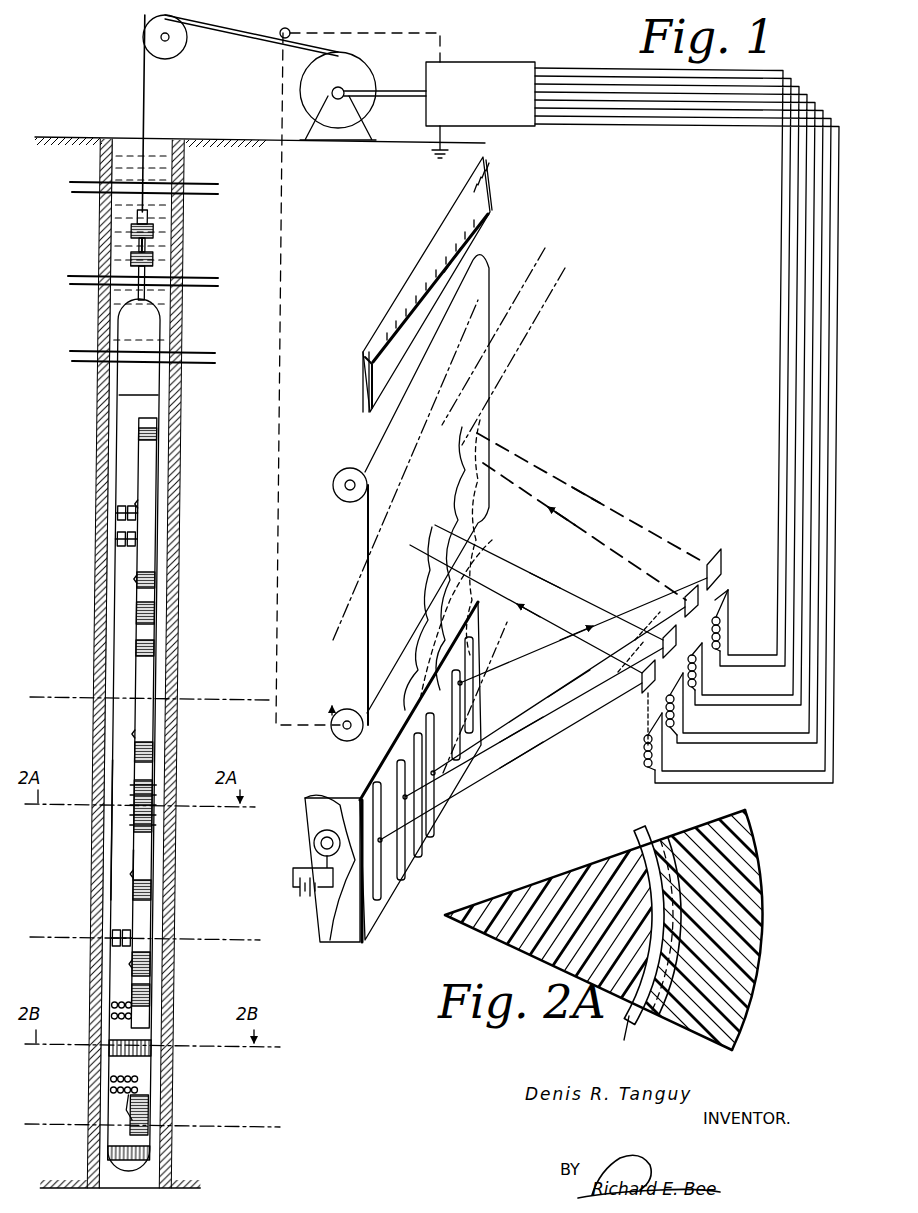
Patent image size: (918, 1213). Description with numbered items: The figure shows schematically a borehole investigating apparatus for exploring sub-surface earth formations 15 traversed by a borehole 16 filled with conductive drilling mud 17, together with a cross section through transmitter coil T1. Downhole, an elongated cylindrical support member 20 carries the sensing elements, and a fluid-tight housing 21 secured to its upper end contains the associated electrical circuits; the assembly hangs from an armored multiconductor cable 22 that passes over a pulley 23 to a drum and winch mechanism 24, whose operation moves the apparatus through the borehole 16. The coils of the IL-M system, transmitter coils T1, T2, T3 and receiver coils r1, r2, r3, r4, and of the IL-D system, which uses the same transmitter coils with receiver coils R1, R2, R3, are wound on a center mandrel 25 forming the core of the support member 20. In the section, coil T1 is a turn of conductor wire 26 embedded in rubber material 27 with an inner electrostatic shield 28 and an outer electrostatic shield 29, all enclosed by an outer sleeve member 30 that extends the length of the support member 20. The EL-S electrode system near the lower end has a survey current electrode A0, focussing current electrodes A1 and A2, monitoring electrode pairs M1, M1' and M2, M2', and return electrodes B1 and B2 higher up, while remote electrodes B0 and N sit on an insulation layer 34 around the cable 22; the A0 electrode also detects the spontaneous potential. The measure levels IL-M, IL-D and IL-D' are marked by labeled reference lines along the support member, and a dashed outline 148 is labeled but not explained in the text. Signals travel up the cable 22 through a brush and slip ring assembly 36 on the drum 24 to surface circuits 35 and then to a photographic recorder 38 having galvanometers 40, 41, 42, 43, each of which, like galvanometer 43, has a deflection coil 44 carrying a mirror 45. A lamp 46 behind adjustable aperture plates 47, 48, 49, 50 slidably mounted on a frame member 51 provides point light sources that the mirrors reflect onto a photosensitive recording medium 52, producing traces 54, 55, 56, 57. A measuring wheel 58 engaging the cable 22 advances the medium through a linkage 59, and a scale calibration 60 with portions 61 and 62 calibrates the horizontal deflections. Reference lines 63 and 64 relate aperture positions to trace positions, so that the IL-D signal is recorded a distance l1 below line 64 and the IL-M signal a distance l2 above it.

In FIG. 1, the sub-surface earth formations 15 is at (103, 424).
In FIG. 1, the borehole 16 is at (105, 452).
In FIG. 1, the drilling mud 17 is at (165, 172).
In FIG. 1, the support member 20 is at (108, 607).
In FIG. 1, the fluid-tight housing 21 is at (118, 382).
In FIG. 1, the armored multiconductor cable 22 is at (140, 102).
In FIG. 1, the pulley 23 is at (178, 60).
In FIG. 1, the drum and winch mechanism 24 is at (360, 60).
In FIG. 1, the center mandrel 25 is at (150, 856).
In FIG. 2A, the center mandrel 25 is at (552, 880).
In FIG. 2A, the turn of conductor wire 26 is at (640, 834).
In FIG. 2A, the rubber material 27 is at (658, 1010).
In FIG. 2A, the inner electrostatic shield 28 is at (622, 1008).
In FIG. 2A, the outer electrostatic shield 29 is at (640, 1012).
In FIG. 1, the outer sleeve member 30 is at (110, 842).
In FIG. 2A, the outer sleeve member 30 is at (742, 906).
In FIG. 1, the layer of electrical insulation material 34 is at (150, 245).
In FIG. 1, the surface circuits 35 is at (478, 62).
In FIG. 1, the brush and slip ring assembly 36 is at (352, 88).
In FIG. 1, the photographic recorder 38 is at (620, 466).
In FIG. 1, the recording galvanometer 40 is at (718, 572).
In FIG. 1, the recording galvanometer 41 is at (712, 588).
In FIG. 1, the recording galvanometer 42 is at (690, 632).
In FIG. 1, the recording galvanometer 43 is at (660, 725).
In FIG. 1, the deflection coil 44 is at (645, 758).
In FIG. 1, the light reflecting mirror 45 is at (642, 708).
In FIG. 1, the electric lamp 46 is at (315, 838).
In FIG. 1, the adjustable aperture plate 47 is at (470, 655).
In FIG. 1, the adjustable aperture plate 48 is at (432, 770).
In FIG. 1, the adjustable aperture plate 49 is at (405, 795).
In FIG. 1, the adjustable aperture plate 50 is at (345, 810).
In FIG. 1, the frame member 51 is at (368, 945).
In FIG. 1, the photosensitive recording medium 52 is at (360, 653).
In FIG. 1, the trace 54 is at (470, 500).
In FIG. 1, the trace 55 is at (478, 540).
In FIG. 1, the trace 56 is at (445, 568).
In FIG. 1, the trace 57 is at (415, 620).
In FIG. 1, the measuring wheel 58 is at (280, 35).
In FIG. 1, the linkage mechanism 59 is at (280, 360).
In FIG. 1, the scale calibration 60 is at (500, 192).
In FIG. 1, the scale calibration portion 61 is at (458, 248).
In FIG. 1, the scale calibration portion 62 is at (385, 345).
In FIG. 1, the reference line 63 is at (500, 645).
In FIG. 1, the reference line 64 is at (347, 612).
In FIG. 1, the depth drive linkage 148 is at (340, 33).
In FIG. 1, the remote voltage reference electrode N is at (130, 228).
In FIG. 1, the current return electrode B0 is at (130, 256).
In FIG. 1, the current return electrode B1 is at (120, 538).
In FIG. 1, the current return electrode B2 is at (120, 512).
In FIG. 1, the transmitter coil T1 is at (155, 820).
In FIG. 2A, the transmitter coil T1 is at (632, 836).
In FIG. 1, the transmitter coil T2 is at (155, 748).
In FIG. 1, the transmitter coil T3 is at (160, 440).
In FIG. 1, the receiver coil R1 is at (155, 586).
In FIG. 1, the receiver coil R2 is at (155, 652).
In FIG. 1, the receiver coil R3 is at (155, 952).
In FIG. 1, the receiver coil r1 is at (155, 1000).
In FIG. 1, the receiver coil r2 is at (155, 1112).
In FIG. 1, the receiver coil r3 is at (155, 896).
In FIG. 1, the receiver coil r4 is at (155, 616).
In FIG. 1, the survey current electrode A0 is at (108, 1048).
In FIG. 1, the upper focussing current electrode A1 is at (108, 938).
In FIG. 1, the lower focussing current electrode A2 is at (105, 1152).
In FIG. 1, the voltage monitoring electrode M1 is at (96, 1005).
In FIG. 1, the voltage monitoring electrode M1' is at (95, 983).
In FIG. 1, the voltage monitoring electrode M2 is at (90, 1083).
In FIG. 1, the voltage monitoring electrode M2' is at (90, 1105).
In FIG. 1, the Induction Log-Deep system measure level IL-D is at (150, 686).
In FIG. 1, the Induction Log-Medium system measure level IL-M is at (195, 942).
In FIG. 1, the induction log deep measure point IL-D' is at (152, 1124).
In FIG. 1, the Electrode Log-Shallow system measure level EL-S is at (200, 1052).
In FIG. 1, the recording distance l1 is at (513, 352).
In FIG. 1, the recording distance l2 is at (523, 305).